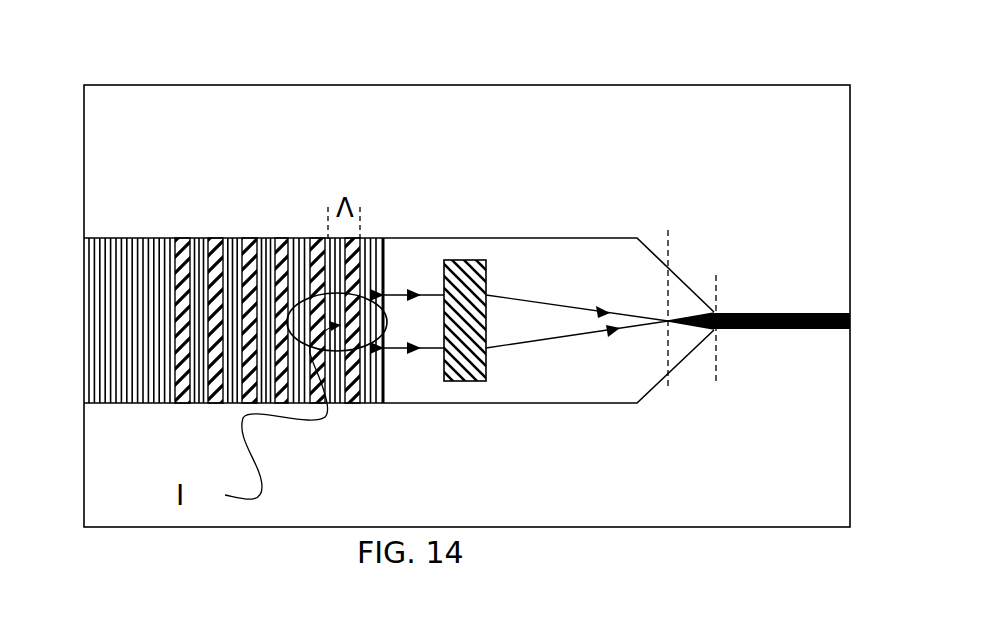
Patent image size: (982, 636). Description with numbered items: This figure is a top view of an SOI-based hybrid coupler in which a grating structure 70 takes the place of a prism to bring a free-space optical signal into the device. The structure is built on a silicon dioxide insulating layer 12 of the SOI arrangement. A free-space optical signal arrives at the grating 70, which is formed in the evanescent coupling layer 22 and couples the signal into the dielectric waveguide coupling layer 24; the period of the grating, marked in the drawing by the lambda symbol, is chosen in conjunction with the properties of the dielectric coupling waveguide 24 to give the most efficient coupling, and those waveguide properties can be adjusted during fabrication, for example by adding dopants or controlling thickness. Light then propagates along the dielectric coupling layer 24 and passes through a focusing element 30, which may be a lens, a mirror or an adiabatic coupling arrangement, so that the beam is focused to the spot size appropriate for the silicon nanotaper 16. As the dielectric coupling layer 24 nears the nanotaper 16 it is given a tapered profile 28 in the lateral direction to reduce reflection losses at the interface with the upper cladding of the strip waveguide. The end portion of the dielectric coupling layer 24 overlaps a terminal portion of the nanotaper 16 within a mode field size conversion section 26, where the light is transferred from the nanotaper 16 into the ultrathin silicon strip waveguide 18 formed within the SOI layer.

The silicon dioxide insulating layer 12 is at (619, 126).
The silicon nanotaper 16 is at (688, 315).
The ultrathin silicon strip waveguide 18 is at (808, 313).
The evanescent coupling layer 22 is at (140, 248).
The dielectric waveguide coupling layer 24 is at (553, 375).
The mode field size conversion section 26 is at (677, 348).
The tapered profile 28 is at (652, 390).
The focusing element 30 is at (470, 272).
The grating structure 70 is at (370, 194).